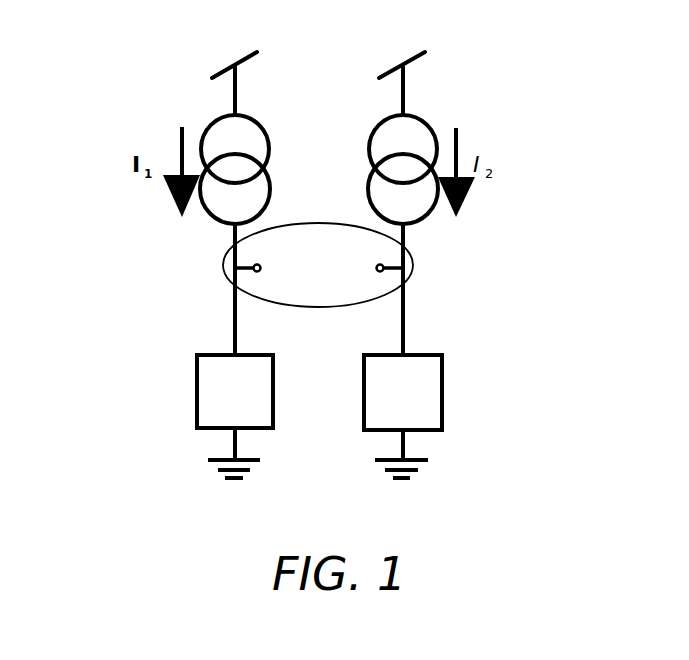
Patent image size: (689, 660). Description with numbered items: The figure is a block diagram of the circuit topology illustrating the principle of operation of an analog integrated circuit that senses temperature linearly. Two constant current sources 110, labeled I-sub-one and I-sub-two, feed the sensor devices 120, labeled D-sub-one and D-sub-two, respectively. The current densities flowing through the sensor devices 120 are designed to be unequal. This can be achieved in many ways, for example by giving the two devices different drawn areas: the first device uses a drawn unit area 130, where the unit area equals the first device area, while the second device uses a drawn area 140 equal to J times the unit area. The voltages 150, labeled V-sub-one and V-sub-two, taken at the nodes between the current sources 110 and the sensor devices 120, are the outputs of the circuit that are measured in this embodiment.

The constant current sources 110 is at (273, 125).
The sensor devices 120 is at (273, 397).
The drawn unit area 130 is at (153, 385).
The drawn area of second device 140 is at (340, 368).
The output voltages 150 is at (407, 253).